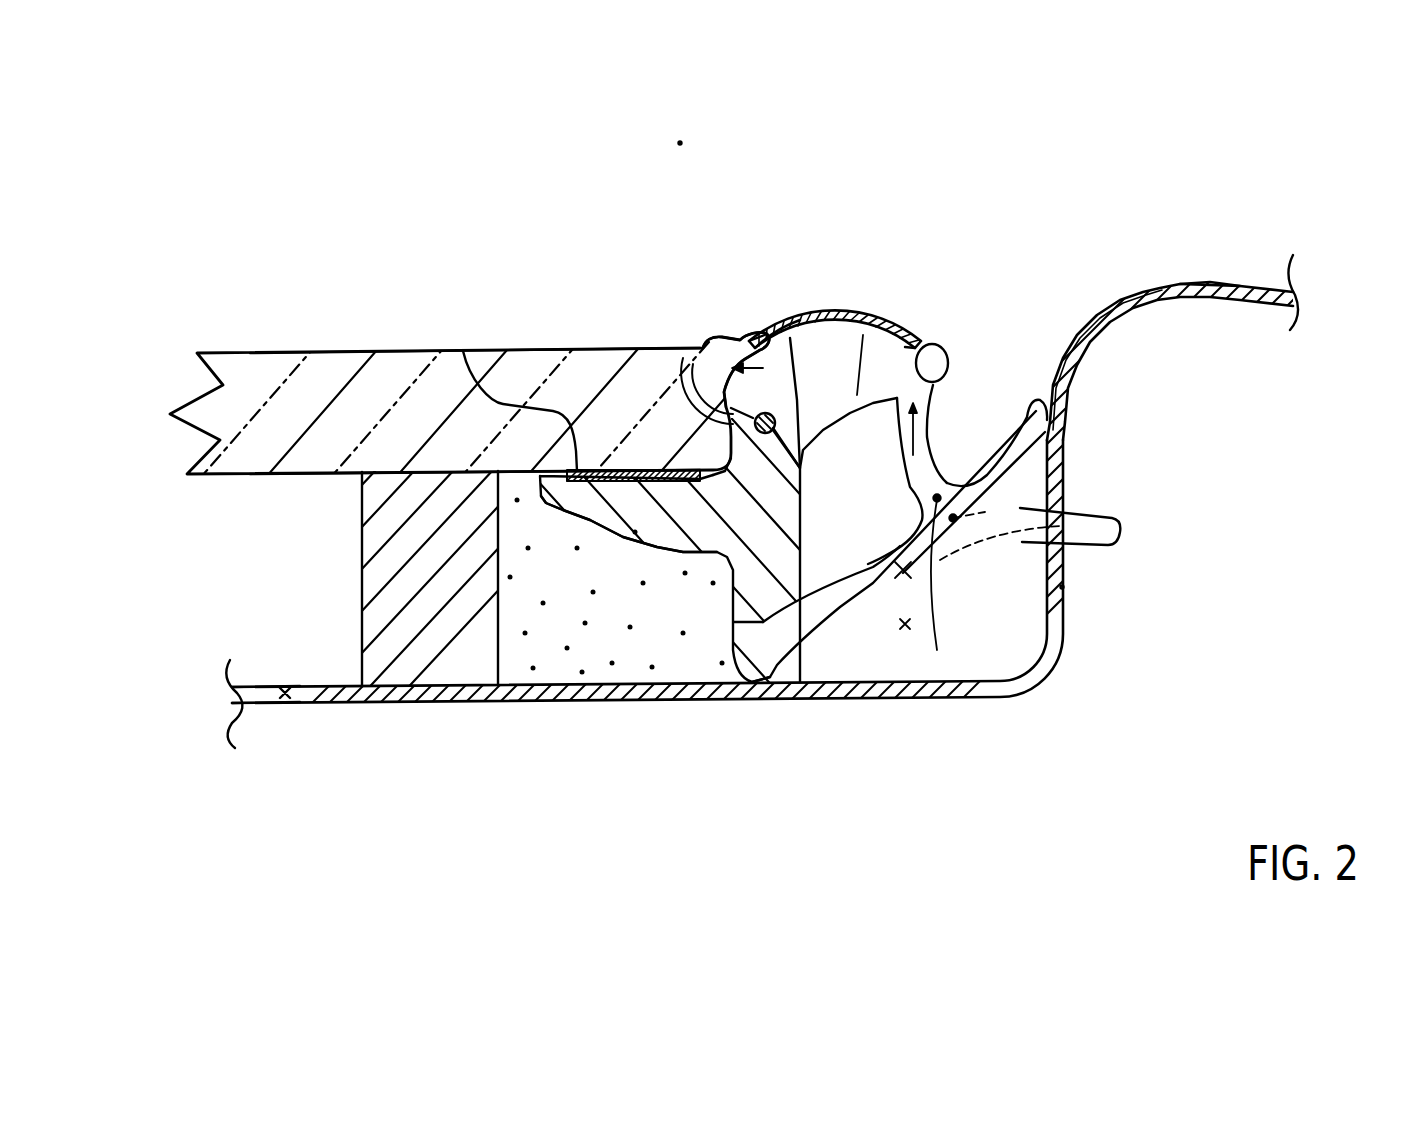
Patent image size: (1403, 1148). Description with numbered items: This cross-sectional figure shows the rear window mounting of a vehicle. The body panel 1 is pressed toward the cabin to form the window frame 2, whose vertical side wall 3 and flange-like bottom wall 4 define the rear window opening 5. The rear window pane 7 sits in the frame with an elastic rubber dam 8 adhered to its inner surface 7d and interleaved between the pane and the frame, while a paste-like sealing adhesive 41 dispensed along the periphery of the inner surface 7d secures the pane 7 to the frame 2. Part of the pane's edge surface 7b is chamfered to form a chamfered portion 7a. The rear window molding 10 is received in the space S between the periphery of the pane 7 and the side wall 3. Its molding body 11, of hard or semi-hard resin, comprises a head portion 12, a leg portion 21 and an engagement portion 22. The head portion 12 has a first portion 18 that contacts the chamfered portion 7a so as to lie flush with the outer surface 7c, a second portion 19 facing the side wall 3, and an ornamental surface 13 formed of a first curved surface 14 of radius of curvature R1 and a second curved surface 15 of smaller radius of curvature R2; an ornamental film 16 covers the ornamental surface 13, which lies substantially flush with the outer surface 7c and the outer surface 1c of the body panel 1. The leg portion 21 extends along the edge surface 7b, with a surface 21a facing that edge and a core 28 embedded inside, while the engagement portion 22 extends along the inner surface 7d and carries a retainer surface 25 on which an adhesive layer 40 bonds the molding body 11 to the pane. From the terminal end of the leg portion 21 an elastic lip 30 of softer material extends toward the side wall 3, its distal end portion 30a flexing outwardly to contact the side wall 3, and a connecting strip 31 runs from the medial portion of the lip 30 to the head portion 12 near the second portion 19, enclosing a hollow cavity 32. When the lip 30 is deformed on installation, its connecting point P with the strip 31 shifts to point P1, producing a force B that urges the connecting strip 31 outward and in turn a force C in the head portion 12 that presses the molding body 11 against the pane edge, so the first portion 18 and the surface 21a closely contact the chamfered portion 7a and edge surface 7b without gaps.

The body panel 1 is at (1247, 287).
The outer surface of body panel 1c is at (1213, 283).
The window frame 2 is at (814, 525).
The side wall 3 is at (1064, 453).
The bottom wall 4 is at (603, 702).
The rear window opening 5 is at (285, 704).
The rear window pane 7 is at (325, 395).
The chamfered portion 7a is at (718, 338).
The edge surface 7b is at (690, 370).
The outer surface 7c is at (383, 352).
The inner surface 7d is at (293, 475).
The rubber dam 8 is at (478, 606).
The rear window molding 10 is at (883, 344).
The molding body 11 is at (639, 589).
The head portion 12 is at (837, 380).
The ornamental surface 13 is at (833, 310).
The first curved surface 14 is at (793, 347).
The second curved surface 15 is at (907, 333).
The ornamental film 16 is at (860, 310).
The first portion 18 is at (750, 335).
The second portion 19 is at (947, 347).
The leg portion 21 is at (750, 425).
The surface of leg portion 21a is at (713, 475).
The engagement portion 22 is at (675, 530).
The retainer surface 25 is at (466, 353).
The core 28 is at (717, 450).
The elastic lip 30 is at (987, 578).
The distal end portion 30a is at (1060, 483).
The connecting strip 31 is at (928, 404).
The hollow cavity 32 is at (867, 505).
The adhesive layer 40 is at (574, 470).
The sealing adhesive 41 is at (572, 676).
The arrow B is at (990, 558).
The arrow C is at (761, 369).
The connecting point P is at (1062, 587).
The point P1 is at (910, 555).
The radius of curvature R1 is at (785, 412).
The radius of curvature R2 is at (882, 365).
The space S is at (903, 633).